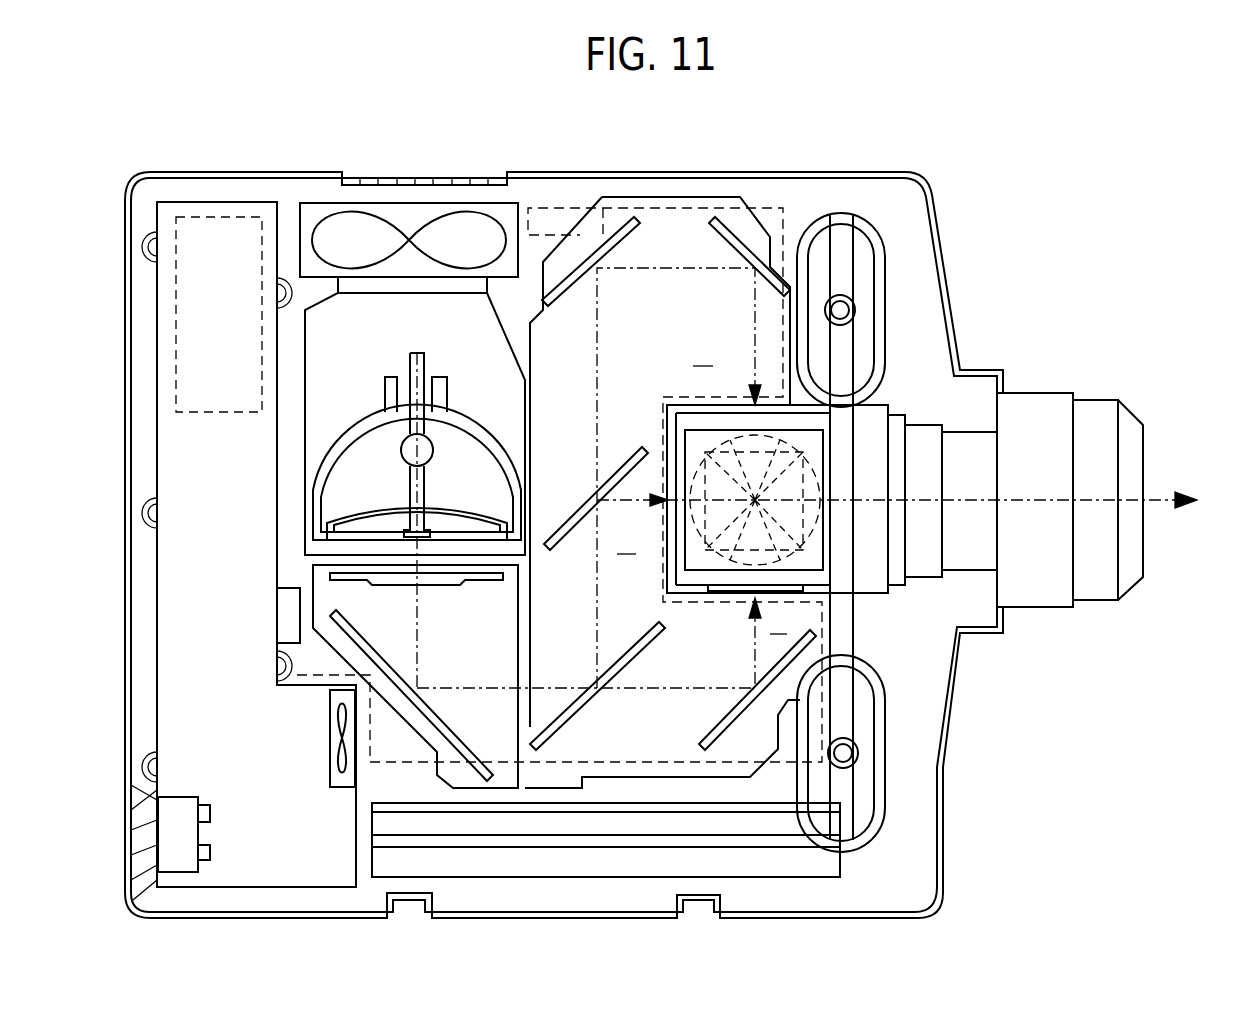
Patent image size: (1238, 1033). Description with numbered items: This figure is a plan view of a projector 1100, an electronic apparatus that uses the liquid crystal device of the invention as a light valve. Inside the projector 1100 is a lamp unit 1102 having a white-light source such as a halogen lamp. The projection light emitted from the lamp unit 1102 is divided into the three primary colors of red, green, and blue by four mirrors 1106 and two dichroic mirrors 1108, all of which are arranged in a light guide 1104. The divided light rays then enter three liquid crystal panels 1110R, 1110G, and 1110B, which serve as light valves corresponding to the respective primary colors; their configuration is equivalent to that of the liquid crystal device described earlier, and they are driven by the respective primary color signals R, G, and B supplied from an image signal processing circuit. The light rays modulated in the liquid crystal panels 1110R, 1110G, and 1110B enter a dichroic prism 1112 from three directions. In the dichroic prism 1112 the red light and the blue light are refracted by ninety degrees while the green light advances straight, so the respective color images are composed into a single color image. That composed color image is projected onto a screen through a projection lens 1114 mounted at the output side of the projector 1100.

The projector 1100 is at (947, 182).
The lamp unit 1102 is at (470, 333).
The light guide 1104 is at (613, 193).
The mirrors 1106 is at (723, 243).
The dichroic mirrors 1108 is at (632, 652).
The liquid crystal panel 1110R is at (717, 407).
The liquid crystal panel 1110G is at (665, 457).
The liquid crystal panel 1110B is at (717, 595).
The dichroic prism 1112 is at (887, 590).
The projection lens 1114 is at (1107, 410).